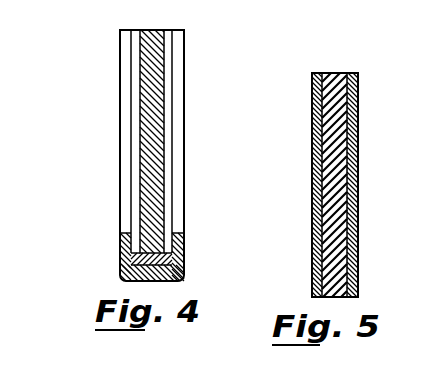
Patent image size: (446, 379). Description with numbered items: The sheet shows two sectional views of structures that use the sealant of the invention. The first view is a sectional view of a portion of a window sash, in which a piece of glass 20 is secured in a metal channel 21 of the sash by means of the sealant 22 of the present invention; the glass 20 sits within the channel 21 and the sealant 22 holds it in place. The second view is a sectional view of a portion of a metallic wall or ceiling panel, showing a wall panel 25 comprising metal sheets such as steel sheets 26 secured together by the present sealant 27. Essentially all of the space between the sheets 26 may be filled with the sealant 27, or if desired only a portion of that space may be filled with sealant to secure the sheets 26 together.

In FIG. 4, the piece of glass 20 is at (145, 123).
In FIG. 4, the metal channel 21 is at (185, 243).
In FIG. 4, the sealant 22 is at (137, 235).
In FIG. 5, the wall panel 25 is at (300, 143).
In FIG. 5, the steel sheets 26 is at (312, 199).
In FIG. 5, the sealant 27 is at (340, 240).